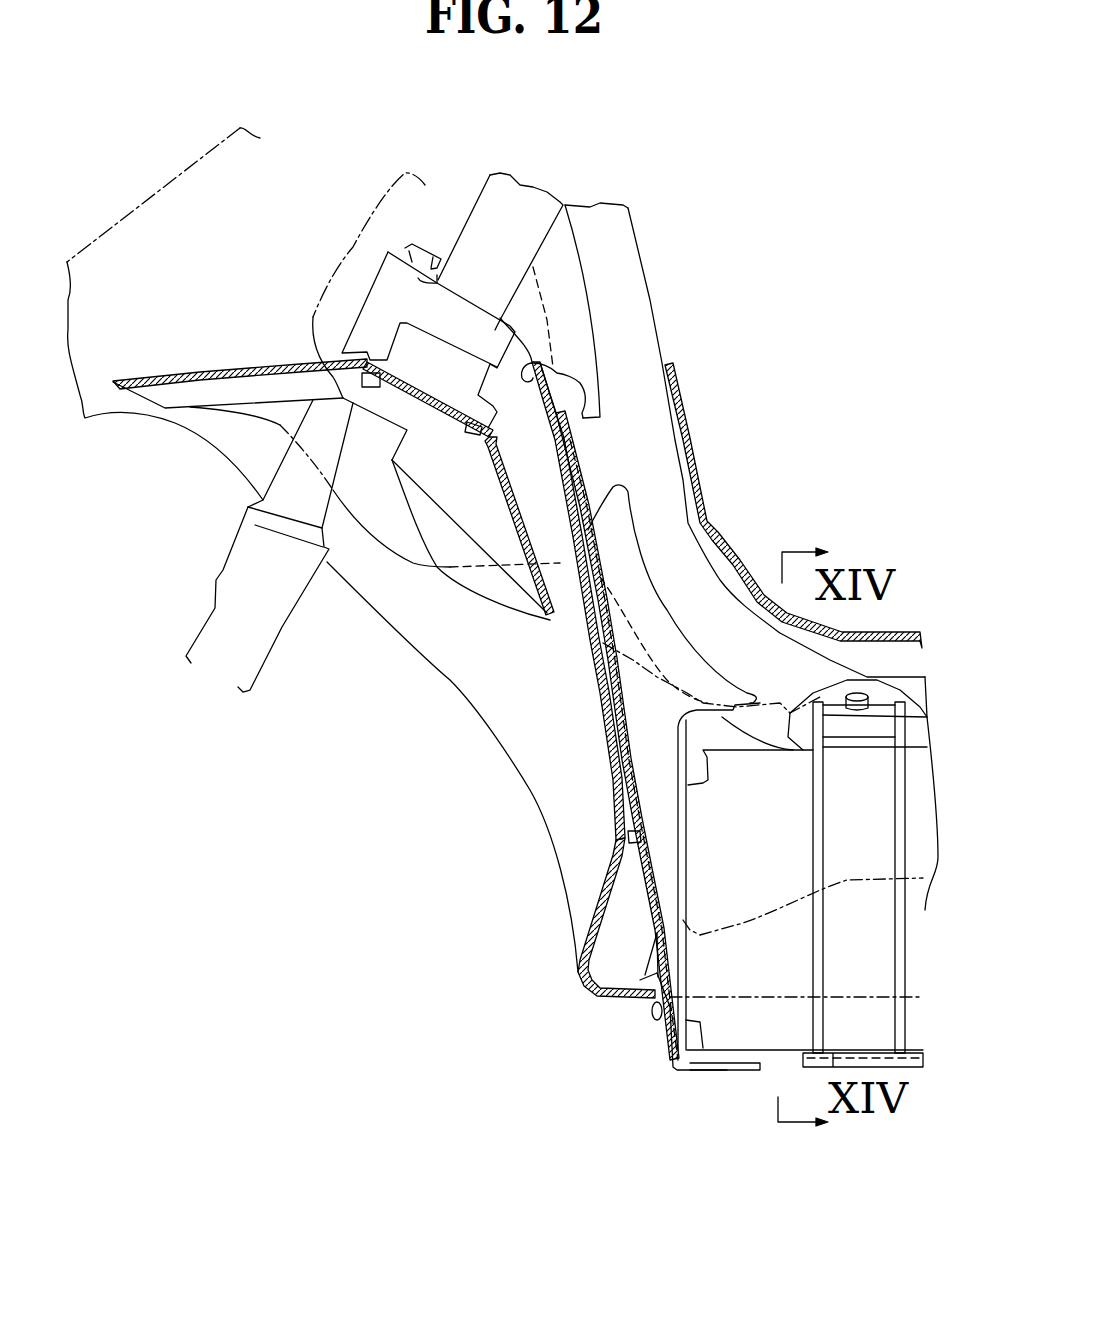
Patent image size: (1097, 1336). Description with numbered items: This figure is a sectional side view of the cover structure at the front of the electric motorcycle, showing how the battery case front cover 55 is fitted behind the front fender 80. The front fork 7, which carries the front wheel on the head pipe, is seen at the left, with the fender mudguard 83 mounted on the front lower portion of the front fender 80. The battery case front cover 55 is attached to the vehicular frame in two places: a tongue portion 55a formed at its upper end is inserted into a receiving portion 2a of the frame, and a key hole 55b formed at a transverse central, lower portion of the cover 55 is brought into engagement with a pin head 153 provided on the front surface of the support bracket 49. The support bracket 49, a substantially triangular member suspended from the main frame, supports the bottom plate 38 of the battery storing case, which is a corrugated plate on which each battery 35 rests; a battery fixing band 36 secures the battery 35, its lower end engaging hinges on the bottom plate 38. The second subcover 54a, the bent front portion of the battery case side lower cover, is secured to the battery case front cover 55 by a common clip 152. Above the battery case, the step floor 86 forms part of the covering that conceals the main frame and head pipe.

The receiving portion 2a is at (500, 342).
The tongue portion 55a is at (548, 393).
The support bracket 49 is at (688, 662).
The step floor 86 is at (905, 630).
The front fork 7 is at (215, 608).
The fender mudguard 83 is at (512, 516).
The front fender 80 is at (530, 790).
The pin head 153 is at (633, 838).
The key hole 55b is at (615, 852).
The battery case front cover 55 is at (590, 912).
The common clip 152 is at (650, 1012).
The second subcover 54a is at (663, 1060).
The bottom plate 38 is at (752, 1065).
The battery 35 is at (793, 862).
The battery fixing band 36 is at (925, 910).